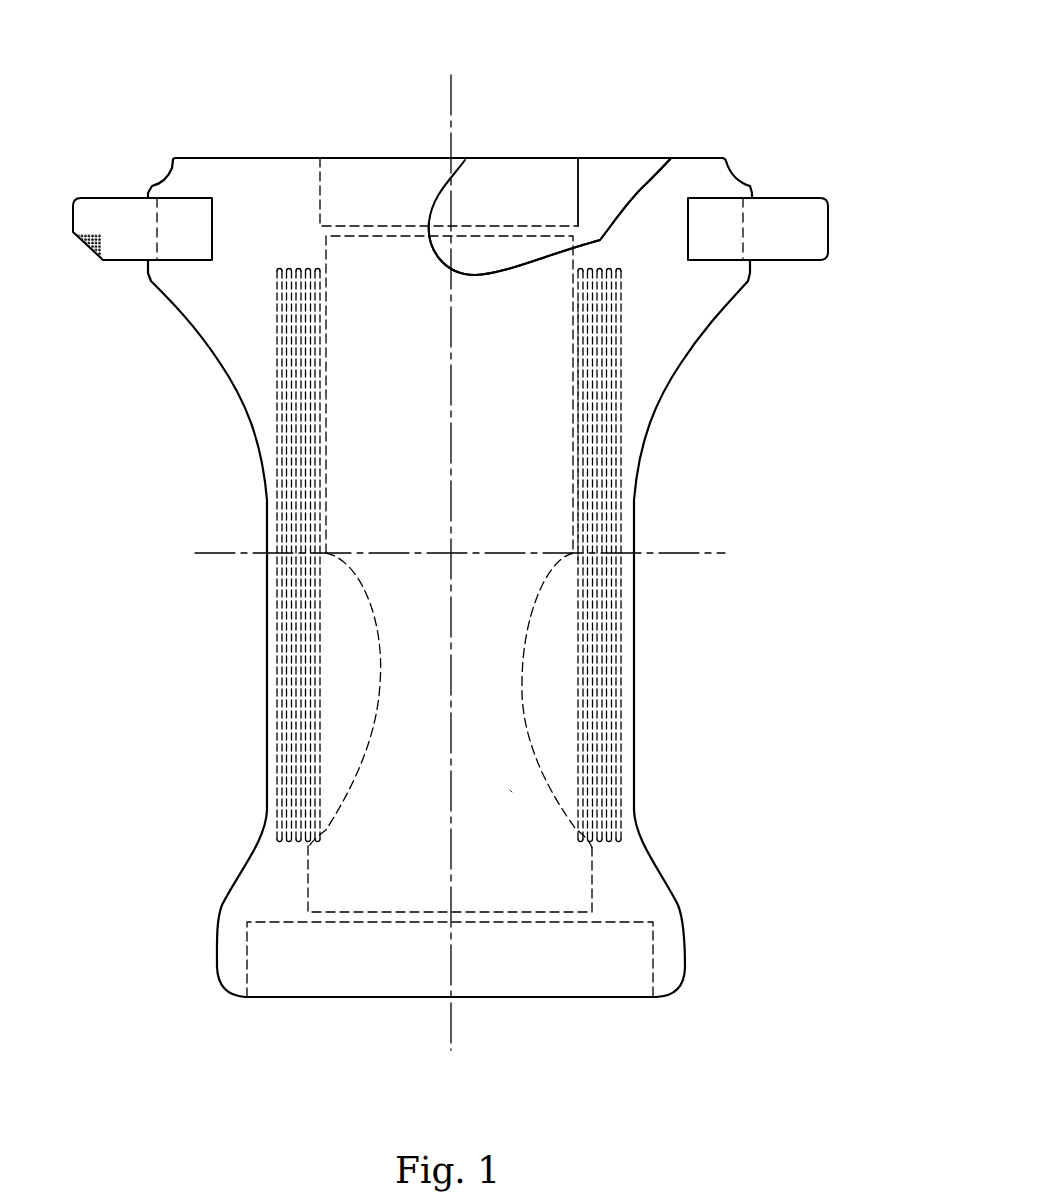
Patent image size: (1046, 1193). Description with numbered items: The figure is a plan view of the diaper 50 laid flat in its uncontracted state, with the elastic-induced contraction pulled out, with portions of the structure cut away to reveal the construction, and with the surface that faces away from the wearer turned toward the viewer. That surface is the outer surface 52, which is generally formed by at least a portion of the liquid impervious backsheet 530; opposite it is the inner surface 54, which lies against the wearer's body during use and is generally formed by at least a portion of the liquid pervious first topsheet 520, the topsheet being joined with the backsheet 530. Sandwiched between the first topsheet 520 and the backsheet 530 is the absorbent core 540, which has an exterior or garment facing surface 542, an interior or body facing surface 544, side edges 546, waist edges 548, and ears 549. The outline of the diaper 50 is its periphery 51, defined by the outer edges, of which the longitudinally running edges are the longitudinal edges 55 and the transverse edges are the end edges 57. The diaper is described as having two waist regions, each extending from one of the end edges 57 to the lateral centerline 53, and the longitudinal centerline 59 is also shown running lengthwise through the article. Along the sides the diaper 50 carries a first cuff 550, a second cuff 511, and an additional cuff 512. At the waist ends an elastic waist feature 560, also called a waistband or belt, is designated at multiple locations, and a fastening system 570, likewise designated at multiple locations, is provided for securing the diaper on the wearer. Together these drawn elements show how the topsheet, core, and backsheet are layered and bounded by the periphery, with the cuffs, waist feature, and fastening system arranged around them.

The diaper 50 is at (762, 88).
The periphery 51 is at (238, 405).
The outer surface 52 is at (510, 790).
The lateral centerline 53 is at (345, 598).
The inner surface 54 is at (560, 435).
The longitudinal edges 55 is at (636, 524).
The end edges 57 is at (268, 157).
The longitudinal centerline 59 is at (452, 1025).
The second cuff 511 is at (296, 682).
The additional cuff 512 is at (308, 721).
The first topsheet 520 is at (630, 178).
The backsheet 530 is at (697, 316).
The absorbent core 540 is at (528, 264).
The exterior surface 542 is at (537, 247).
The interior surface 544 is at (468, 252).
The side edges 546 is at (330, 520).
The waist edges 548 is at (362, 233).
The ears 549 is at (345, 858).
The first cuff 550 is at (618, 675).
The elastic waist feature 560 is at (423, 185).
The fastening system 570 is at (138, 228).